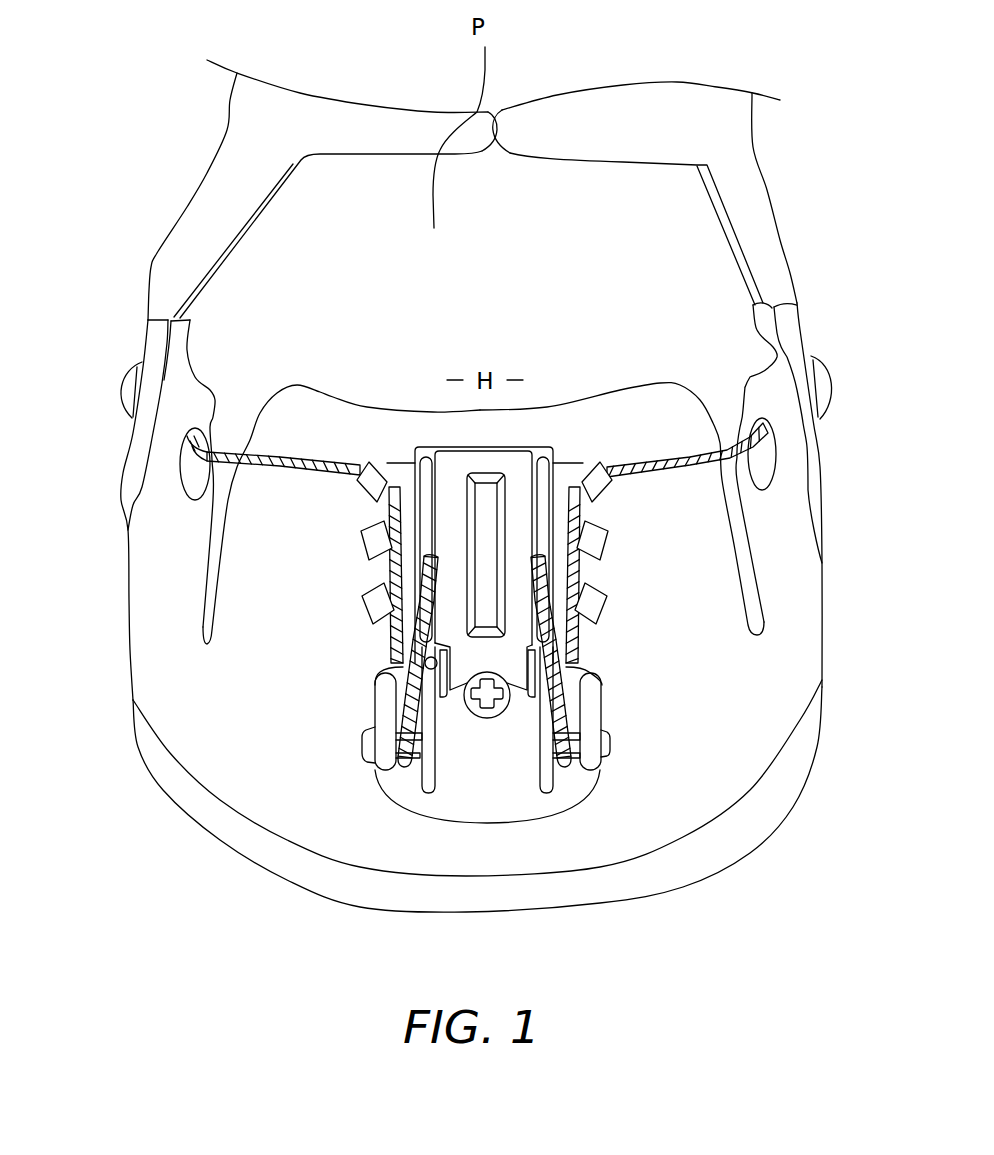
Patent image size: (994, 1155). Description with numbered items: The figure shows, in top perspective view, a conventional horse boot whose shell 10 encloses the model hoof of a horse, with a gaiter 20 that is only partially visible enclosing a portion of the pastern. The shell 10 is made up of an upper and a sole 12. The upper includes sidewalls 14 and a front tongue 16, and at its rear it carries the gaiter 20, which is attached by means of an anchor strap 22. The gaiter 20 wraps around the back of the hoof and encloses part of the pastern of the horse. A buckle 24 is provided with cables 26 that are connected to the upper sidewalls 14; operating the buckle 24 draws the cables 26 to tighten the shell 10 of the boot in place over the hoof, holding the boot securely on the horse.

The shell 10 is at (126, 637).
The sole 12 is at (685, 863).
The sidewalls 14 is at (150, 550).
The front tongue 16 is at (313, 400).
The gaiter 20 is at (770, 278).
The anchor strap 22 is at (800, 350).
The buckle 24 is at (507, 535).
The cables 26 is at (690, 457).